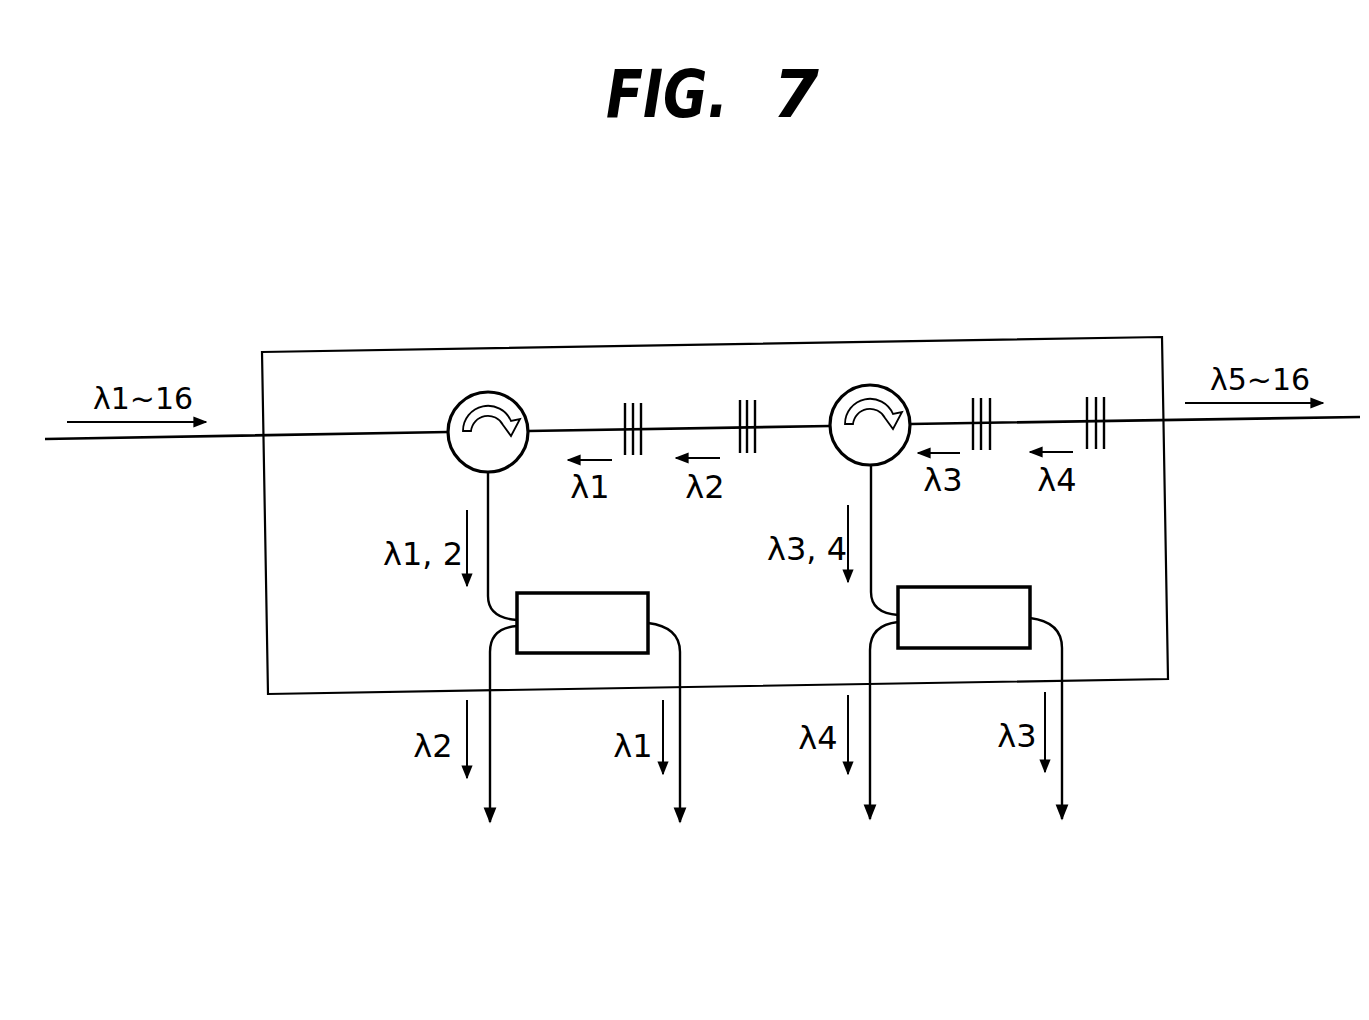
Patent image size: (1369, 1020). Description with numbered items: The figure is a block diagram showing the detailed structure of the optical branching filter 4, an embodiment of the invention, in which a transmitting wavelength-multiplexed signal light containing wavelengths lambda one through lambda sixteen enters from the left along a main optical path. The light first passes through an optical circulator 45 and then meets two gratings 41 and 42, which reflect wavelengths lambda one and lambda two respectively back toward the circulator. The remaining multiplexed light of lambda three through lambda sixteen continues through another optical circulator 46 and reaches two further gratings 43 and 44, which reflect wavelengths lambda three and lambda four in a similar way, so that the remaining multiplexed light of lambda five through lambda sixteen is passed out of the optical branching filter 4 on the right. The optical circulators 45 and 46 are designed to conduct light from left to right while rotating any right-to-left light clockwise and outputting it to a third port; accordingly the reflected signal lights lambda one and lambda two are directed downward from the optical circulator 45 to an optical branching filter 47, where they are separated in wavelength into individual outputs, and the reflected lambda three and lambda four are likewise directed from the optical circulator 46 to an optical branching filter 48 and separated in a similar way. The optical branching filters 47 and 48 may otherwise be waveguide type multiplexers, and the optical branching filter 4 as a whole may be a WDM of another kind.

The optical branching filter 4 is at (1093, 337).
The grating 41 is at (633, 403).
The grating 42 is at (743, 400).
The grating 43 is at (975, 398).
The grating 44 is at (1095, 396).
The optical circulator 45 is at (458, 461).
The optical circulator 46 is at (841, 455).
The optical branching filter 47 is at (617, 593).
The optical branching filter 48 is at (1000, 587).